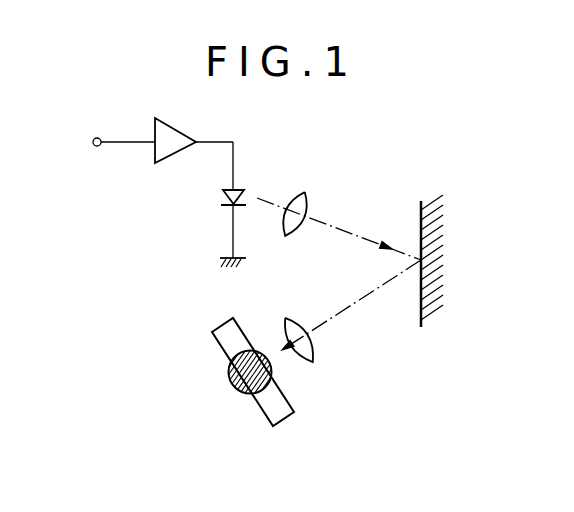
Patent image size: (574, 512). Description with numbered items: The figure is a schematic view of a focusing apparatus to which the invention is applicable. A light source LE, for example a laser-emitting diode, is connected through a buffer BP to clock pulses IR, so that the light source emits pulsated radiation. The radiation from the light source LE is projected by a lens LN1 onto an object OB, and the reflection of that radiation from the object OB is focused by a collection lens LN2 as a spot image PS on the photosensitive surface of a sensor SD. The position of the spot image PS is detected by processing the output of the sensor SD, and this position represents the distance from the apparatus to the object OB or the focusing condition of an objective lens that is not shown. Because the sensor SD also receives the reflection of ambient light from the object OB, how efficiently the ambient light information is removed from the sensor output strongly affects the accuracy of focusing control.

The clock pulses IR is at (106, 141).
The buffer BP is at (180, 132).
The light source LE is at (243, 189).
The lens LN1 is at (306, 192).
The collection lens LN2 is at (290, 317).
The object OB is at (420, 305).
The sensor SD is at (286, 395).
The spot image PS is at (259, 350).